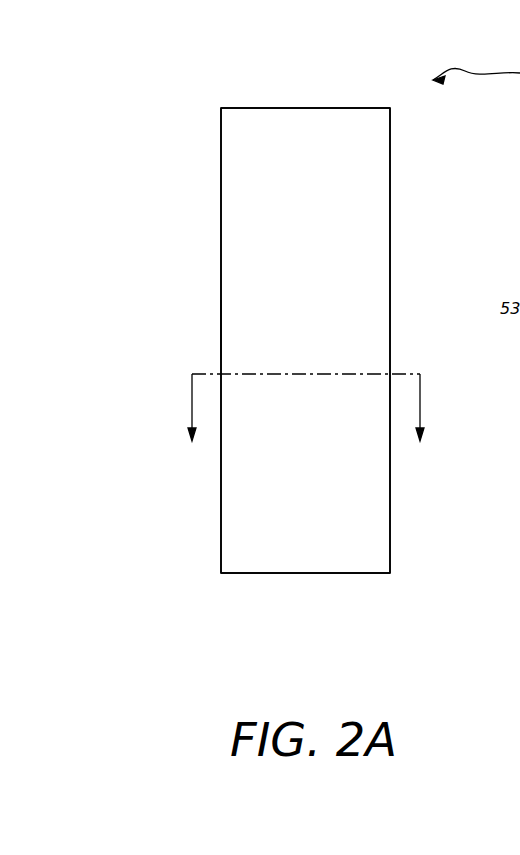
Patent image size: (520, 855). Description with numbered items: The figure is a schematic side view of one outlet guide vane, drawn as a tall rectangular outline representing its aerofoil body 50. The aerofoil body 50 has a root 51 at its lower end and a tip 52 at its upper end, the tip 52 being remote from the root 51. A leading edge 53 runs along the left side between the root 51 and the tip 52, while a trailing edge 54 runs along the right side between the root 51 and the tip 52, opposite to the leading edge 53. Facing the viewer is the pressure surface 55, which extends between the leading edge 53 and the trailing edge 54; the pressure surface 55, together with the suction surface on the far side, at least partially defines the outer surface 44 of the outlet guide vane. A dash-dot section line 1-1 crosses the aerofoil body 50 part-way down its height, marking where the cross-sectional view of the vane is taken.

The outer surface 44 is at (358, 470).
The aerofoil body 50 is at (148, 283).
The root 51 is at (315, 574).
The tip 52 is at (243, 107).
The leading edge 53 is at (221, 168).
The trailing edge 54 is at (390, 163).
The pressure surface 55 is at (241, 327).
The line 1- 1 is at (306, 408).